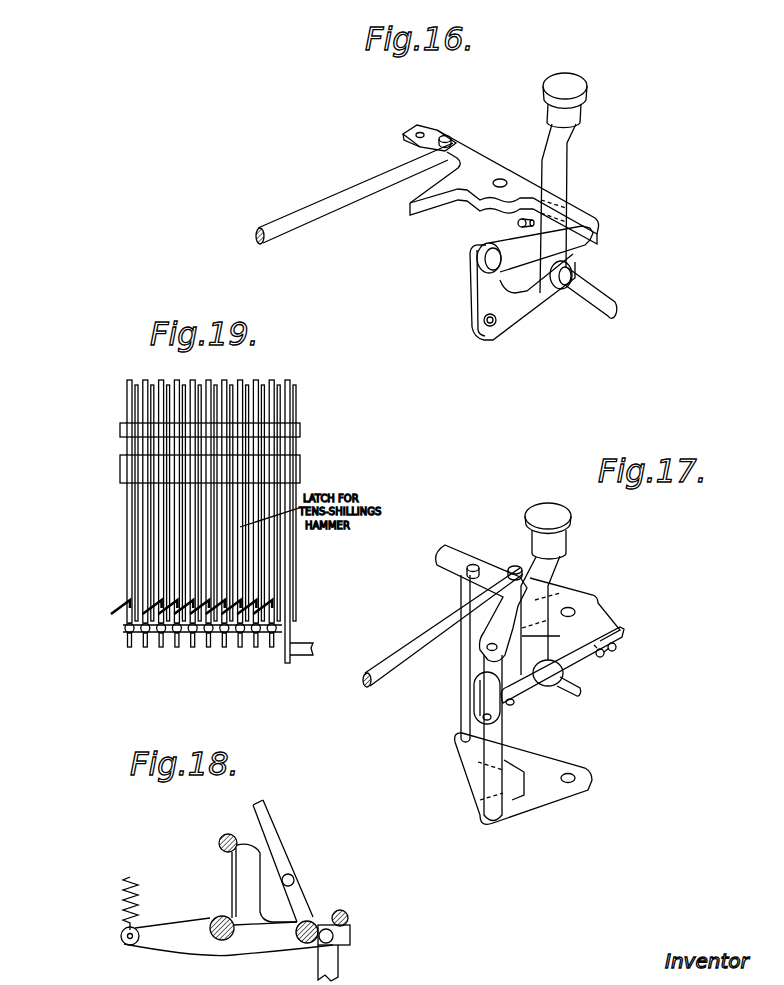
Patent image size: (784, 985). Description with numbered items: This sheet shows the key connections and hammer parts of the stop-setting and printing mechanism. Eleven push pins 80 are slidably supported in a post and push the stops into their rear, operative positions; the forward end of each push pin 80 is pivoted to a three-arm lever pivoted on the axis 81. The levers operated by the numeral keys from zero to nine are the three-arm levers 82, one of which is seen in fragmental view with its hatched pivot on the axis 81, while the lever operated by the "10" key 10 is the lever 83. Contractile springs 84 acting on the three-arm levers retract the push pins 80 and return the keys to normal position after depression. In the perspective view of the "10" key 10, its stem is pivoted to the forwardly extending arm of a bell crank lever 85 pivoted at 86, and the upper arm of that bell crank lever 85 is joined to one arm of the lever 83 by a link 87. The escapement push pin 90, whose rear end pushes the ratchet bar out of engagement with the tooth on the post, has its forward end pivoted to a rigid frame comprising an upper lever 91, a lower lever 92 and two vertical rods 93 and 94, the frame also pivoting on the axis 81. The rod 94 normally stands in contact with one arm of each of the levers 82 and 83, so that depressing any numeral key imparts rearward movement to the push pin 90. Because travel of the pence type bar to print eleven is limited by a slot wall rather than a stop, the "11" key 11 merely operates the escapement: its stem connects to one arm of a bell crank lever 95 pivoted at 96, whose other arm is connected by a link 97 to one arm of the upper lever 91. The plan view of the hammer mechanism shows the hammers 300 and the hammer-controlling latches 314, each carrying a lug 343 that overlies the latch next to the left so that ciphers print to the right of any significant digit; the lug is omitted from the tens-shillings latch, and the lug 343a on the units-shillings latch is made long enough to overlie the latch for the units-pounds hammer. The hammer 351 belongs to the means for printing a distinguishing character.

In FIG. 16, the "10" key 10 is at (563, 183).
In FIG. 17, the "11" key 11 is at (546, 589).
In FIG. 16, the push pin 80 is at (325, 197).
In FIG. 18, the push pin 80 is at (275, 848).
In FIG. 16, the axis 81 is at (503, 180).
In FIG. 17, the axis 81 is at (573, 610).
In FIG. 18, the axis 81 is at (225, 916).
In FIG. 18, the three-arm lever 82 is at (270, 940).
In FIG. 16, the lever 83 is at (486, 161).
In FIG. 16, the contractile spring 84 is at (518, 222).
In FIG. 18, the contractile spring 84 is at (138, 892).
In FIG. 16, the bell crank lever 85 is at (528, 300).
In FIG. 16, the pivot 86 is at (494, 328).
In FIG. 16, the link 87 is at (520, 250).
In FIG. 17, the push pin 90 is at (427, 636).
In FIG. 17, the upper lever 91 is at (500, 560).
In FIG. 17, the lower lever 92 is at (530, 752).
In FIG. 17, the vertical rod 93 is at (461, 670).
In FIG. 18, the vertical rod 93 is at (343, 910).
In FIG. 17, the vertical rod 94 is at (484, 787).
In FIG. 18, the vertical rod 94 is at (227, 834).
In FIG. 17, the bell crank lever 95 is at (528, 700).
In FIG. 17, the pivot 96 is at (474, 724).
In FIG. 17, the link 97 is at (556, 700).
In FIG. 19, the hammer 300 is at (137, 518).
In FIG. 19, the hammer-controlling latch 314 is at (145, 538).
In FIG. 19, the lug 343 is at (123, 615).
In FIG. 19, the lug 343a is at (233, 644).
In FIG. 19, the hammer 351 is at (297, 567).